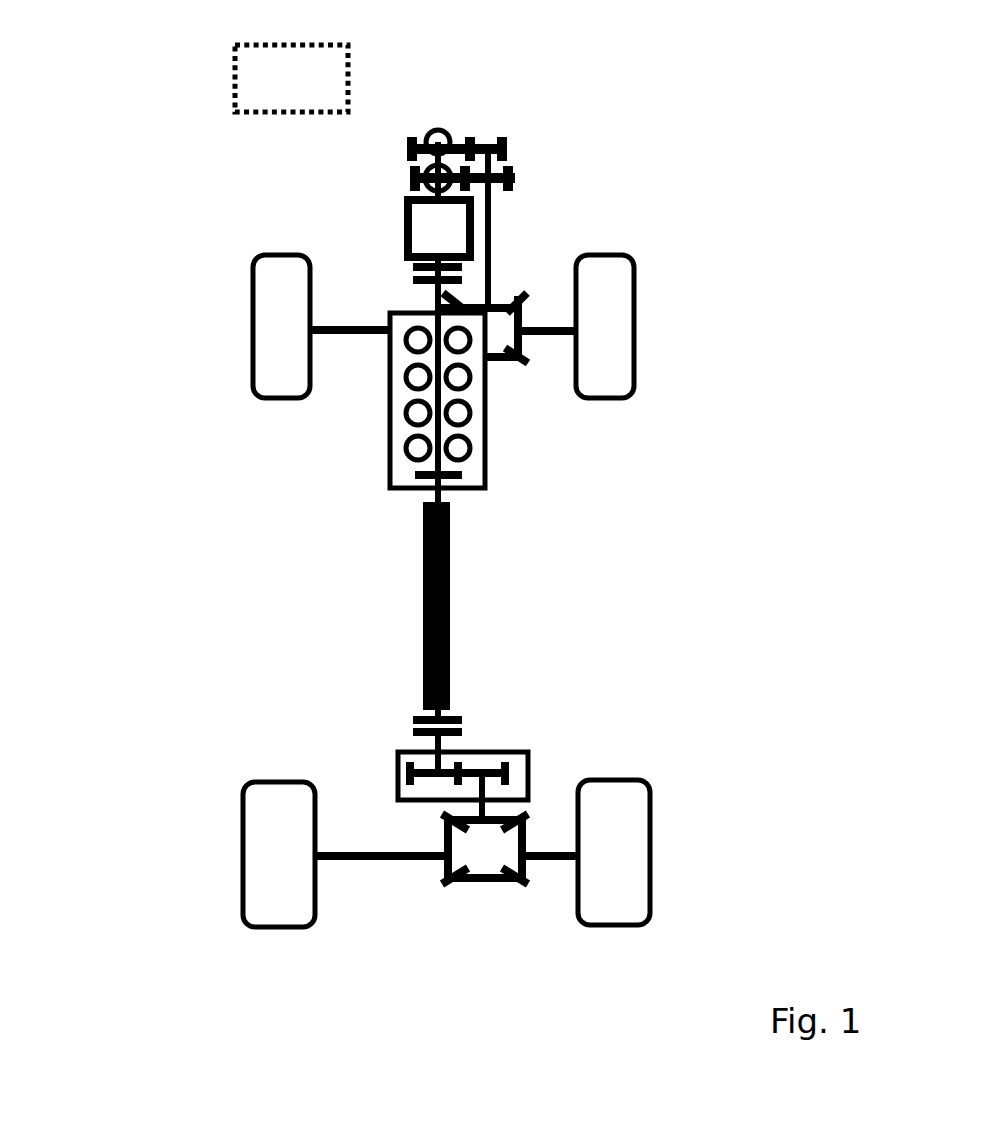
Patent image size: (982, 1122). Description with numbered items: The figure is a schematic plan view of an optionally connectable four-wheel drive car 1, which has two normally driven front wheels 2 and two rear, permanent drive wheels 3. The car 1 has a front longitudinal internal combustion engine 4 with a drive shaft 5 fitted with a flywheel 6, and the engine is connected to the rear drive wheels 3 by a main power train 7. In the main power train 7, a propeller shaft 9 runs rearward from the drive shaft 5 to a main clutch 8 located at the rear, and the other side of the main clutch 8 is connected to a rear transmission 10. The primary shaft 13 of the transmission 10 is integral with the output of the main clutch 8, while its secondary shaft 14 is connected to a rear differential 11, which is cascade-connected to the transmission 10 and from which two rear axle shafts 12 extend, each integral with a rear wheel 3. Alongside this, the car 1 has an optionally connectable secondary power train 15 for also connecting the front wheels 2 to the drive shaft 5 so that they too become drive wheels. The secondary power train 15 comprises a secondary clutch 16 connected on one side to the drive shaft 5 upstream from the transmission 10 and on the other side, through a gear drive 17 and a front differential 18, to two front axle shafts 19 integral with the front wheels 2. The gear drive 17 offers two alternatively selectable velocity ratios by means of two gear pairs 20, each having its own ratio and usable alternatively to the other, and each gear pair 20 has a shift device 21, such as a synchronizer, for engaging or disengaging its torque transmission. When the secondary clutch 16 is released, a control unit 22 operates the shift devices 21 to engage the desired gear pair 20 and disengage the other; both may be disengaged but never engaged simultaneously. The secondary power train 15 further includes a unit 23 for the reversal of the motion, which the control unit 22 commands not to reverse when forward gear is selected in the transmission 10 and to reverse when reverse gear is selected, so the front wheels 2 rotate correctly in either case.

The car 1 is at (165, 247).
The front wheels 2 is at (275, 337).
The rear drive wheels 3 is at (280, 843).
The internal combustion engine 4 is at (395, 478).
The drive shaft 5 is at (430, 460).
The flywheel 6 is at (445, 492).
The main power train 7 is at (582, 637).
The main clutch 8 is at (415, 722).
The propeller shaft 9 is at (423, 545).
The rear transmission 10 is at (485, 760).
The rear differential 11 is at (486, 858).
The rear axle shafts 12 is at (405, 862).
The primary shaft 13 is at (420, 770).
The secondary shaft 14 is at (505, 768).
The secondary power train 15 is at (598, 128).
The secondary clutch 16 is at (413, 272).
The gear drive 17 is at (508, 88).
The front differential 18 is at (497, 330).
The front axle shafts 19 is at (371, 335).
The gear pairs 20 is at (390, 147).
The shift device 21 is at (432, 137).
The control unit 22 is at (291, 78).
The unit for the reversal of the motion 23 is at (382, 229).